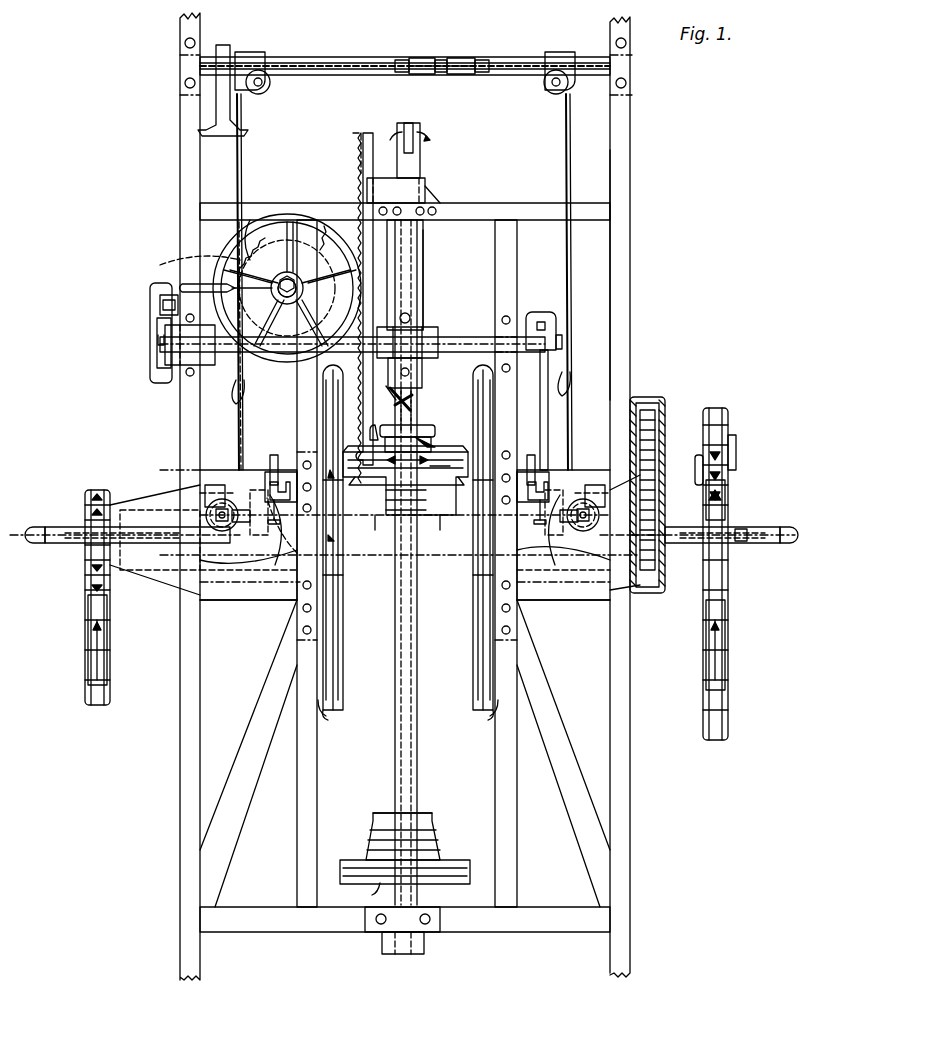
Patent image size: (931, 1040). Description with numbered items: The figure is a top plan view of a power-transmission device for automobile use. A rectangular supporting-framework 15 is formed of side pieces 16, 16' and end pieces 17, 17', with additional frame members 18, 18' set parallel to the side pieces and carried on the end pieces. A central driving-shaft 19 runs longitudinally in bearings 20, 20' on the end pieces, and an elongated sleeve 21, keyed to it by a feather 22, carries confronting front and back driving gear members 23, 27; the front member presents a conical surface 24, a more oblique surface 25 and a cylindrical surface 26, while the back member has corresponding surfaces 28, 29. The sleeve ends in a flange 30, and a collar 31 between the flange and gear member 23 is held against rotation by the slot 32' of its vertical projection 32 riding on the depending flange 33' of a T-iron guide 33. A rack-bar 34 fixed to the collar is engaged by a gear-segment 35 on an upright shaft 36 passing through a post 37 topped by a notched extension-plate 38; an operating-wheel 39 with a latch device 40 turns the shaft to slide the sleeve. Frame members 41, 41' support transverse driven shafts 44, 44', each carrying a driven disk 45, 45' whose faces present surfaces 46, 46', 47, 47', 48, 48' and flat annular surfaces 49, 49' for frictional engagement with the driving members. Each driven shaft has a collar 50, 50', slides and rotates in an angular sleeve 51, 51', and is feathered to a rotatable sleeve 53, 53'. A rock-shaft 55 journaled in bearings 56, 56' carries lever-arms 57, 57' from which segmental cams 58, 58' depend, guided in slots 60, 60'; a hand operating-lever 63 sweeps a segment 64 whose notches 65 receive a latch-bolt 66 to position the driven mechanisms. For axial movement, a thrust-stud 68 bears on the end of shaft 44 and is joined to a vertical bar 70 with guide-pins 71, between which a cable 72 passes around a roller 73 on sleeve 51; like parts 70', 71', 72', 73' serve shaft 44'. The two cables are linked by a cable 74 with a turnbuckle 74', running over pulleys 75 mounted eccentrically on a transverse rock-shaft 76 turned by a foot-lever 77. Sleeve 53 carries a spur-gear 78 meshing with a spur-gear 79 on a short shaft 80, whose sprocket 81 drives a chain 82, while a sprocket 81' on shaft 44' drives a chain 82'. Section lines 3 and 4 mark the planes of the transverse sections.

The section line 3- 3 is at (30, 535).
The section line 4- 4 is at (650, 395).
The supporting-framework 15 is at (636, 275).
The side piece 16 is at (643, 497).
The side piece 16' is at (164, 496).
The end piece 17 is at (405, 196).
The end piece 17' is at (405, 934).
The frame member 18 is at (552, 563).
The frame member 18' is at (258, 563).
The driving-shaft 19 is at (421, 158).
The bearing 20 is at (414, 184).
The bearing 20' is at (413, 935).
The elongated sleeve 21 is at (418, 655).
The feather 22 is at (382, 425).
The front driving gear member 23 is at (405, 480).
The peripheral surface 24 is at (385, 516).
The inclined surface 25 is at (445, 500).
The cylindrical surface 26 is at (465, 462).
The back driving gear member 27 is at (403, 836).
The active surface 28 is at (436, 826).
The active surface 29 is at (470, 866).
The flange 30 is at (410, 428).
The collar 31 is at (420, 438).
The vertical projection 32 is at (426, 403).
The slot 32' is at (426, 381).
The T-iron guide 33 is at (436, 337).
The depending flange 33' is at (431, 340).
The rack-bar 34 is at (365, 268).
The gear-segment 35 is at (352, 148).
The upright shaft 36 is at (300, 283).
The post 37 is at (287, 278).
The extension-plate 38 is at (336, 290).
The operating-wheel 39 is at (235, 250).
The latch device 40 is at (160, 266).
The frame member 41 is at (563, 613).
The frame member 41' is at (248, 617).
The driven shaft 44 is at (563, 535).
The driven shaft 44' is at (248, 535).
The driven gear member 45 is at (481, 727).
The driven gear member 45' is at (337, 718).
The deflected surface 46 is at (465, 537).
The deflected surface 46' is at (351, 537).
The inclined surface 47 is at (465, 547).
The inclined surface 47' is at (351, 540).
The additional surface 48 is at (464, 732).
The additional surface 48' is at (345, 707).
The annular surface 49 is at (457, 540).
The annular surface 49' is at (355, 540).
The collar 50 is at (563, 570).
The collar 50' is at (248, 546).
The angular sleeve 51 is at (563, 577).
The angular sleeve 51' is at (252, 579).
The sleeve 53 is at (648, 543).
The sleeve 53' is at (155, 548).
The rock-shaft 55 is at (528, 330).
The bearing 56 is at (571, 392).
The bearing 56' is at (352, 353).
The lever-arm 57 is at (580, 376).
The lever-arm 57' is at (232, 408).
The segmental cam 58 is at (565, 496).
The segmental cam 58' is at (257, 497).
The slot 60 is at (533, 464).
The slot 60' is at (288, 464).
The hand operating-lever 63 is at (160, 328).
The segment 64 is at (156, 370).
The notches 65 is at (152, 352).
The latch-bolt 66 is at (158, 322).
The thrust-stud 68 is at (750, 530).
The vertical bar 70 is at (786, 555).
The vertical bar 70' is at (44, 516).
The guide-pins 71 is at (749, 556).
The guide-pins 71' is at (125, 551).
The cable 72 is at (577, 478).
The cable 72' is at (204, 518).
The roller 73 is at (577, 528).
The roller 73' is at (245, 524).
The cable 74 is at (400, 282).
The turnbuckle 74' is at (442, 82).
The pulleys 75 is at (254, 53).
The rock-shaft 76 is at (352, 58).
The foot-lever 77 is at (218, 97).
The spur-gear 78 is at (715, 500).
The spur-gear 79 is at (660, 430).
The short shaft 80 is at (738, 452).
The sprocket 81 is at (738, 571).
The sprocket 81' is at (75, 597).
The chain 82 is at (740, 645).
The drive-chain 82' is at (121, 640).